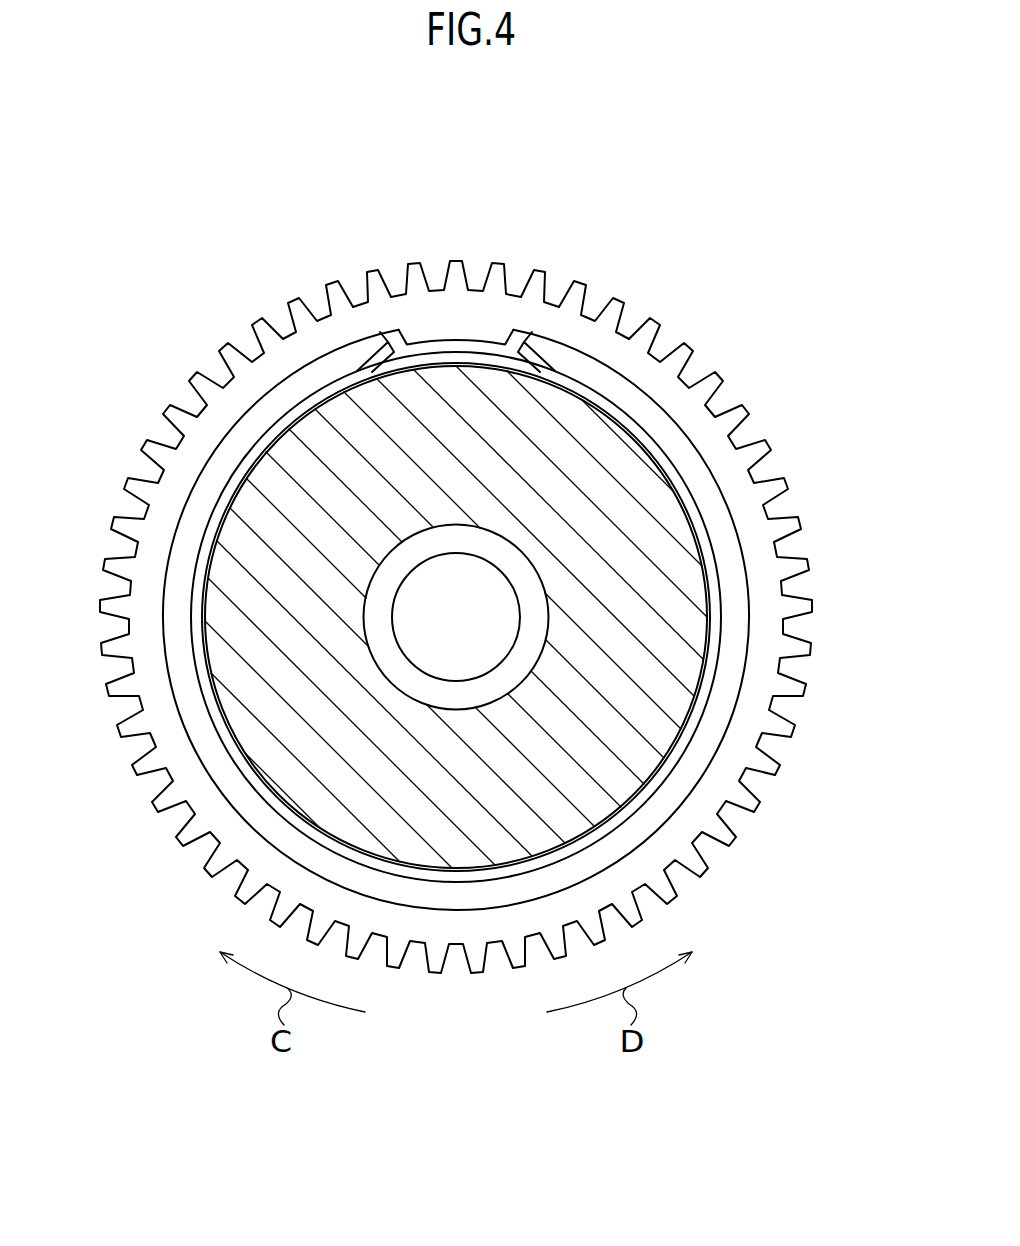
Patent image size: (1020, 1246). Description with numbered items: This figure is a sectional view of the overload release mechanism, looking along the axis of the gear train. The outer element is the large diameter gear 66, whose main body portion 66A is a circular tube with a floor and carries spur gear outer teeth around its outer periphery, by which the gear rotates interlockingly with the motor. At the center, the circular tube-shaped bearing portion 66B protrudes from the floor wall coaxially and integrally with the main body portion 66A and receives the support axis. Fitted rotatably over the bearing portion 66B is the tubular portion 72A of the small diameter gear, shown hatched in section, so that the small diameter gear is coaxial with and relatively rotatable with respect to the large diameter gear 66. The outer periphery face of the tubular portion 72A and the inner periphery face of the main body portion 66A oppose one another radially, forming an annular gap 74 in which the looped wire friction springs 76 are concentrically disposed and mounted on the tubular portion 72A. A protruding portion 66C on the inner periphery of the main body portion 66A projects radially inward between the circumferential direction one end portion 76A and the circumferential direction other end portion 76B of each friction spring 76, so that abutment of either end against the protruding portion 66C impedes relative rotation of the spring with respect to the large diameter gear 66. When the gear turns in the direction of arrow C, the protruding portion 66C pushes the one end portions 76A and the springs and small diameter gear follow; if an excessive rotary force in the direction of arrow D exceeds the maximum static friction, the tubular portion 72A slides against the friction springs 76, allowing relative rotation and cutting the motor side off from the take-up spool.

The large diameter gear 66 is at (717, 363).
The main body portion 66A is at (797, 731).
The bearing portion 66B is at (527, 587).
The protruding portion 66C is at (457, 332).
The tubular portion 72A is at (273, 715).
The annular gap 74 is at (682, 778).
The friction spring 76 is at (193, 570).
The circumferential direction one end portion 76A is at (533, 353).
The circumferential direction other end portion 76B is at (387, 348).